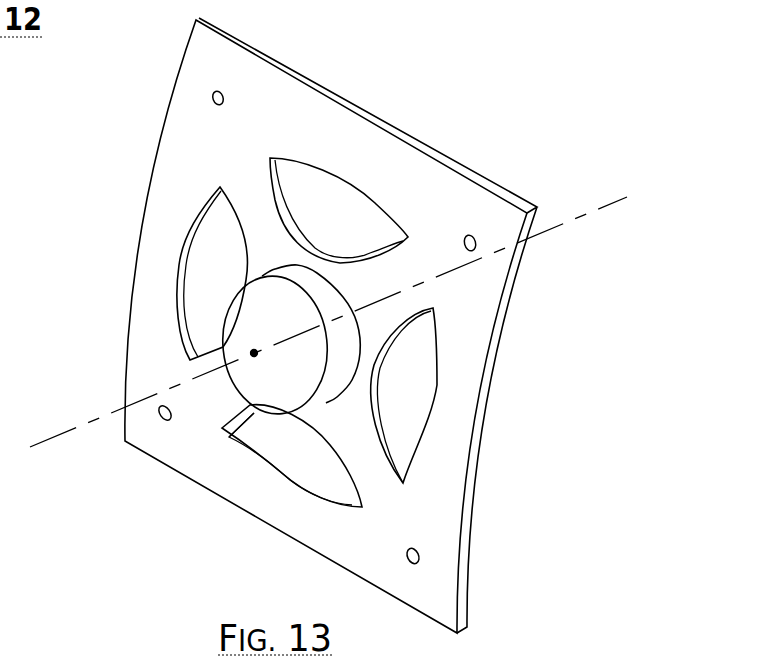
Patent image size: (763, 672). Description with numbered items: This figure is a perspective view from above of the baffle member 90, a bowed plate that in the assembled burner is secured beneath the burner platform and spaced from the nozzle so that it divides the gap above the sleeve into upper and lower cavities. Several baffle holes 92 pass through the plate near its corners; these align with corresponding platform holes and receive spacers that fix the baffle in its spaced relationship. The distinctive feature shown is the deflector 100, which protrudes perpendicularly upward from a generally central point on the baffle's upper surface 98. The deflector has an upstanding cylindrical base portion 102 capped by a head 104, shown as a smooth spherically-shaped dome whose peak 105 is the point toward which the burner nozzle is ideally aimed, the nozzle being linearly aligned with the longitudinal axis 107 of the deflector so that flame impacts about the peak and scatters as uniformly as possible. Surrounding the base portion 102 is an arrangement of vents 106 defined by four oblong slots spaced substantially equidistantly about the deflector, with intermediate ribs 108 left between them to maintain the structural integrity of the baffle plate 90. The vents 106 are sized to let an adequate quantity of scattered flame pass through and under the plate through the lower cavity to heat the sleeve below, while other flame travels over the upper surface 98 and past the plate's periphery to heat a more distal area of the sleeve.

The baffle member 90 is at (448, 207).
The baffle holes 92 is at (234, 99).
The upper surface 98 is at (464, 357).
The deflector 100 is at (262, 430).
The cylindrical base portion 102 is at (307, 283).
The head 104 is at (291, 378).
The peak 105 is at (252, 352).
The vents 106 is at (235, 282).
The longitudinal axis 107 is at (85, 423).
The intermediate ribs 108 is at (258, 207).